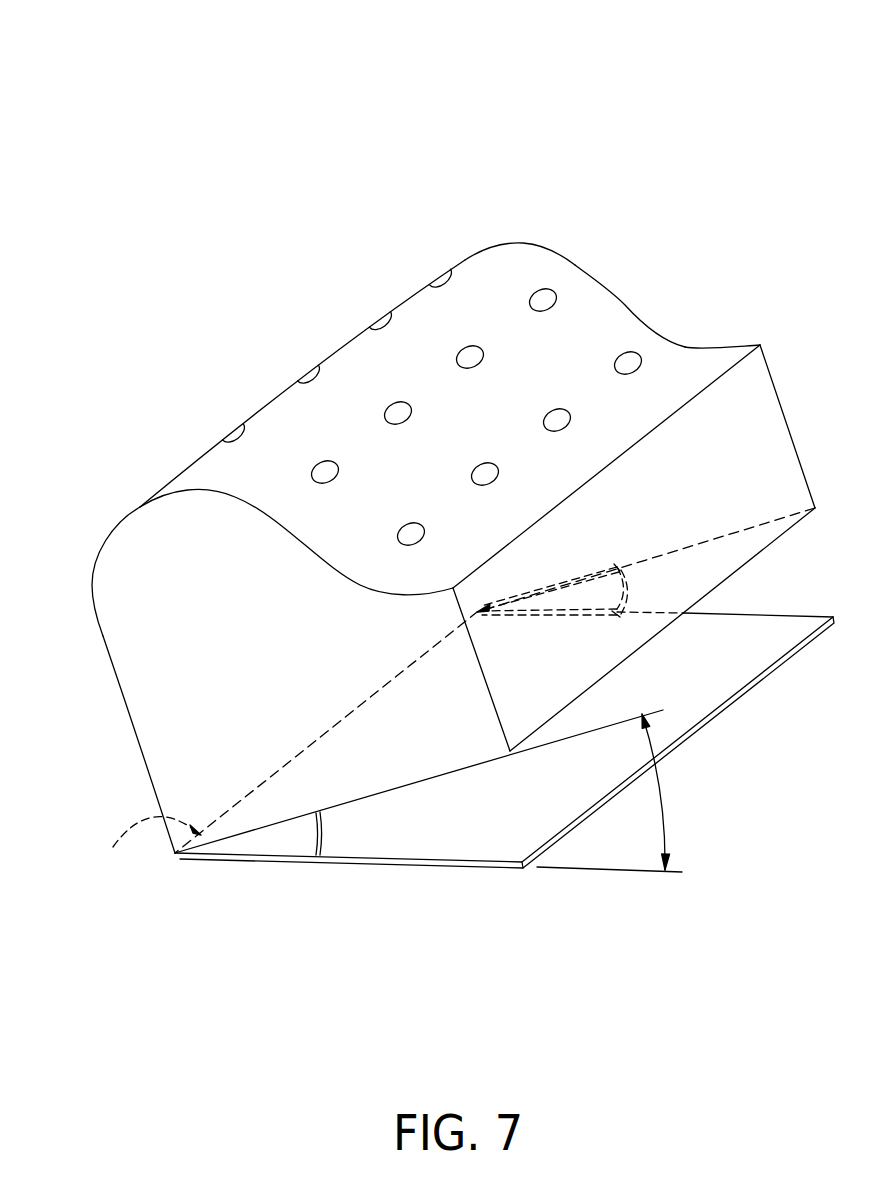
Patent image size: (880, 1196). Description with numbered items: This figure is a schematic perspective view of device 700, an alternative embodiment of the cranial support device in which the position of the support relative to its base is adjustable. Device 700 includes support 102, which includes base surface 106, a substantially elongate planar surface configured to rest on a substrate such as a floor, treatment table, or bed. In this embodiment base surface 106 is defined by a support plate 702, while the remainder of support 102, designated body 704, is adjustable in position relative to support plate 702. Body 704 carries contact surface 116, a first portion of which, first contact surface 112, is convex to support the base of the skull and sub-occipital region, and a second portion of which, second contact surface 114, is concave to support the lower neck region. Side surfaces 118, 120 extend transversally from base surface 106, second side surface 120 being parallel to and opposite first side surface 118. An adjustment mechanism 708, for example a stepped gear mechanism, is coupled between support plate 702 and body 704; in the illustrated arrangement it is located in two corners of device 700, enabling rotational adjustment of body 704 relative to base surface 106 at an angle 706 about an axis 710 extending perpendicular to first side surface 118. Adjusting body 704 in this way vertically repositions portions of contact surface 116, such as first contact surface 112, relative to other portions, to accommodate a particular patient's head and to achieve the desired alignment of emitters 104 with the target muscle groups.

The device 700 is at (713, 90).
The support 102 is at (80, 512).
The emitters 104 is at (430, 281).
The base surface 106 is at (212, 875).
The first contact surface 112 is at (462, 265).
The second contact surface 114 is at (662, 352).
The contact surface 116 is at (595, 290).
The first side surface 118 is at (115, 648).
The second side surface 120 is at (485, 248).
The support plate 702 is at (475, 868).
The body 704 is at (153, 728).
The angle 706 is at (668, 797).
The adjustment mechanism 708 is at (323, 830).
The axis 710 is at (142, 844).